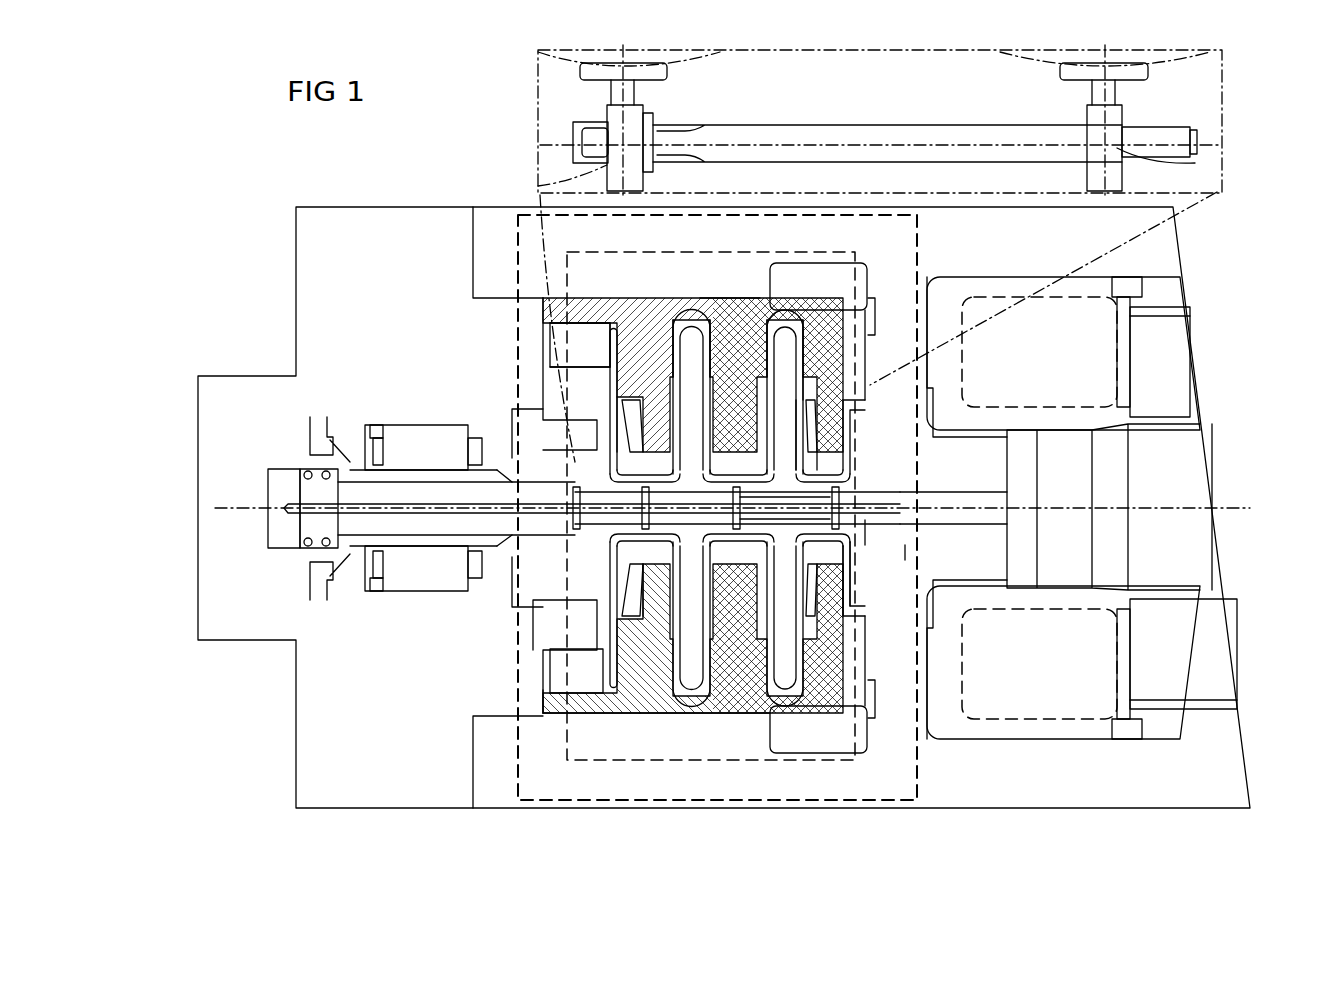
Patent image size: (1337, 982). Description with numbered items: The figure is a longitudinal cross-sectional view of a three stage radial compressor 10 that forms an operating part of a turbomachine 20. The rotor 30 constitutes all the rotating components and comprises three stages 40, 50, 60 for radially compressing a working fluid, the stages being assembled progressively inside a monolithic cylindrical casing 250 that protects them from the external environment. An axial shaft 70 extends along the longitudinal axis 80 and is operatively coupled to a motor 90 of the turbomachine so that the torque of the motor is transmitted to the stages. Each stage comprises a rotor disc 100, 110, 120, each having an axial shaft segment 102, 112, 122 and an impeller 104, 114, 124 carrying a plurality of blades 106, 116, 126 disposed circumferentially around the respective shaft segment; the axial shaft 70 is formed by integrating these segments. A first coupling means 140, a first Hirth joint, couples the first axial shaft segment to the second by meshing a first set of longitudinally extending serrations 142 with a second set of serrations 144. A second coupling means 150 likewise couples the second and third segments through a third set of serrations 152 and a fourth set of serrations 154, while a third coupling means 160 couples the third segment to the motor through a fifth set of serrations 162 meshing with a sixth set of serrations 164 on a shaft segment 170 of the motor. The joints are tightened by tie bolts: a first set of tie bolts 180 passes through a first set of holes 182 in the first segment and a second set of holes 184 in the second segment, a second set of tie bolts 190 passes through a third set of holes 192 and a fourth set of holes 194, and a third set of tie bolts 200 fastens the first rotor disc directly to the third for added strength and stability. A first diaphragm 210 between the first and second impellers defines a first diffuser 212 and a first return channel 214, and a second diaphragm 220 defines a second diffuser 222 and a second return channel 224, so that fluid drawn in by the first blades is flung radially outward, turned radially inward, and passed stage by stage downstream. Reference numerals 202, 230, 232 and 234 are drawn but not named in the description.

The radial compressor 10 is at (708, 816).
The turbomachine 20 is at (287, 742).
The rotor 30 is at (1220, 380).
The first stage 40 is at (617, 738).
The second stage 50 is at (698, 732).
The third stage 60 is at (797, 754).
The axial shaft 70 is at (346, 527).
The longitudinal axis 80 is at (1241, 498).
The motor 90 is at (1203, 553).
The first rotor disc 100 is at (589, 416).
The first axial shaft segment 102 is at (555, 478).
The first impeller 104 is at (572, 468).
The first plurality of blades 106 is at (619, 397).
The second rotor disc 110 is at (691, 384).
The second axial shaft segment 112 is at (660, 548).
The second impeller 114 is at (683, 460).
The second plurality of blades 116 is at (791, 372).
The third rotor disc 120 is at (789, 343).
The third axial shaft segment 122 is at (812, 450).
The third impeller 124 is at (798, 400).
The third plurality of blades 126 is at (822, 447).
The first coupling means 140 is at (622, 98).
The first set of longitudinally extending serrations 142 is at (612, 104).
The second set of longitudinally extending serrations 144 is at (652, 122).
The second coupling means 150 is at (1105, 98).
The third set of longitudinally extending serrations 152 is at (1092, 103).
The fourth set of longitudinally extending serrations 154 is at (1122, 126).
The third coupling means 160 is at (914, 469).
The fifth set of longitudinally extending serrations 162 is at (913, 548).
The sixth set of longitudinally extending serrations 164 is at (843, 541).
The shaft segment of the motor 170 is at (1010, 474).
The first set of tie bolts 180 is at (822, 124).
The first set of holes 182 is at (598, 176).
The second set of holes 184 is at (1195, 163).
The second set of tie bolts 190 is at (808, 590).
The third set of holes 192 is at (676, 526).
The fourth set of holes 194 is at (882, 490).
The third set of tie bolts 200 is at (660, 497).
The bearing 202 is at (637, 540).
The first diaphragm 210 is at (630, 322).
The first diffuser 212 is at (592, 336).
The first return channel 214 is at (612, 338).
The second diaphragm 220 is at (723, 298).
The second diffuser 222 is at (672, 340).
The second return channel 224 is at (713, 340).
The inlet duct 230 is at (843, 310).
The stator channel 232 is at (764, 360).
The third stator finger 234 is at (790, 346).
The casing 250 is at (556, 718).